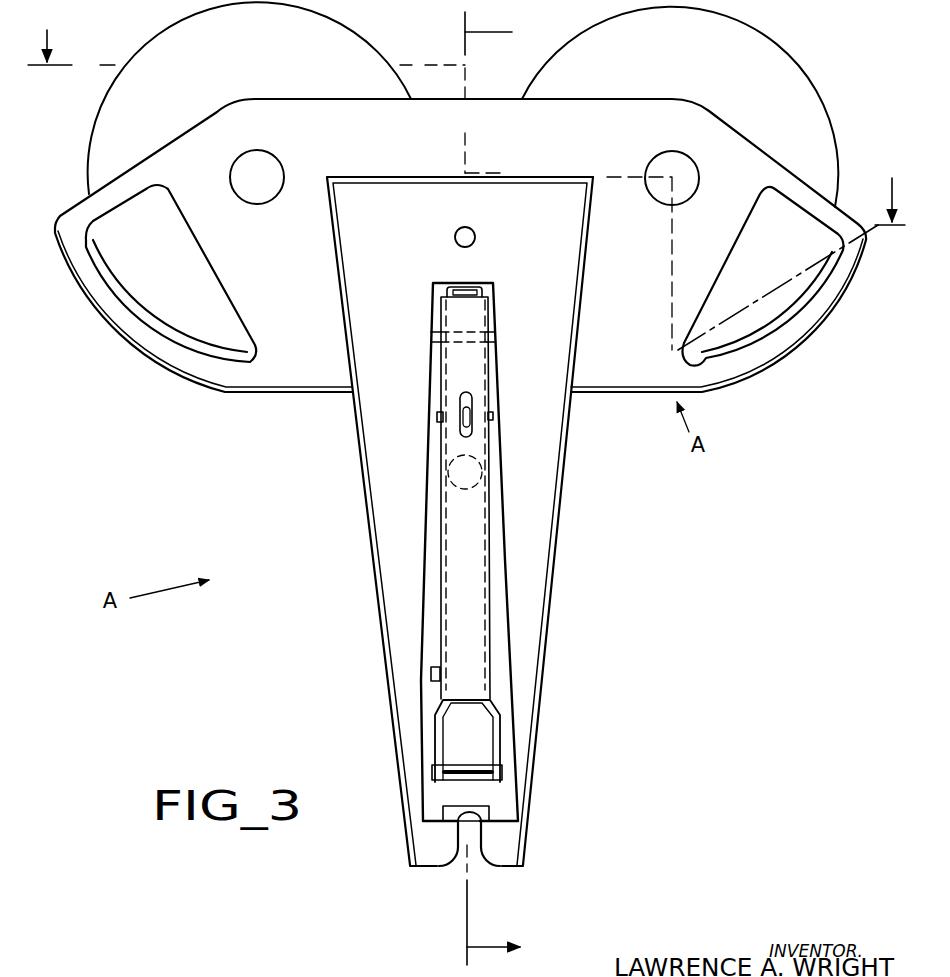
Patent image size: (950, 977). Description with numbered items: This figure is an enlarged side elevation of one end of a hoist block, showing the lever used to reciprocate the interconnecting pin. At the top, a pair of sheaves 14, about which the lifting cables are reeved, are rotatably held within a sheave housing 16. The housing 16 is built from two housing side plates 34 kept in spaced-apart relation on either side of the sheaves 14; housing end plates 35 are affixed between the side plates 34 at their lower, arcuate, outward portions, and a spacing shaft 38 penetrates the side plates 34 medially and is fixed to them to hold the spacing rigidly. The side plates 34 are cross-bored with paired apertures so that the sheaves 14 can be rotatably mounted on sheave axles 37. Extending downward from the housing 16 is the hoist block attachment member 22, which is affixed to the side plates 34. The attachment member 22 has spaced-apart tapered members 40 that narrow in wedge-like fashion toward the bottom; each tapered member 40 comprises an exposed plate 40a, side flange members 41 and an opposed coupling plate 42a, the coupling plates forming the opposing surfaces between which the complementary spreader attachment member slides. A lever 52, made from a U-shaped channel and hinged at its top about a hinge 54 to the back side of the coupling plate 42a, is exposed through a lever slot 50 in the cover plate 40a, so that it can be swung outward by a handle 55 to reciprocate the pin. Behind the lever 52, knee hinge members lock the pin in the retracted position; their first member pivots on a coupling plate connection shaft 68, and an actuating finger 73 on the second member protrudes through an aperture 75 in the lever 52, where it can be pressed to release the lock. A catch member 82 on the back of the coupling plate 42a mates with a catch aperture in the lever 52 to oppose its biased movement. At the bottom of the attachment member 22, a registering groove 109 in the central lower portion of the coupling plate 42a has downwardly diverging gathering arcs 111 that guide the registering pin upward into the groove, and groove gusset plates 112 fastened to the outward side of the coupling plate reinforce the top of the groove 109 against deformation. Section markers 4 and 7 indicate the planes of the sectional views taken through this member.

The section line 4- 4 is at (466, 175).
The section line 7- 7 is at (536, 488).
The sheave 14 is at (171, 32).
The sheave housing 16 is at (628, 97).
The hoist block attachment member 22 is at (566, 498).
The housing side plate 34 is at (158, 167).
The housing end plate 35 is at (163, 373).
The sheave axle 37 is at (257, 187).
The spacing shaft 38 is at (460, 228).
The tapered member 40 is at (382, 539).
The exposed plate 40a is at (370, 347).
The side flange member 41 is at (377, 591).
The coupling plate 42a is at (430, 807).
The lever slot 50 is at (433, 282).
The lever 52 is at (477, 618).
The hinge 54 is at (473, 285).
The handle 55 is at (463, 759).
The coupling plate connection shaft 68 is at (435, 415).
The actuating finger 73 is at (465, 408).
The aperture 75 is at (463, 436).
The catch member 82 is at (431, 675).
The registering groove 109 is at (467, 847).
The gathering arc 111 is at (478, 847).
The groove gusset plate 112 is at (492, 814).